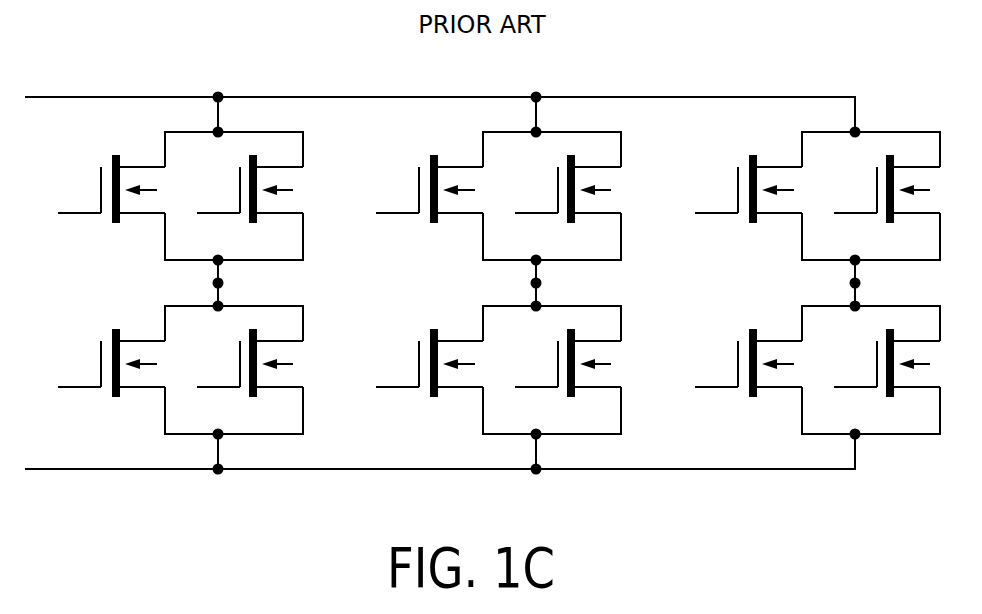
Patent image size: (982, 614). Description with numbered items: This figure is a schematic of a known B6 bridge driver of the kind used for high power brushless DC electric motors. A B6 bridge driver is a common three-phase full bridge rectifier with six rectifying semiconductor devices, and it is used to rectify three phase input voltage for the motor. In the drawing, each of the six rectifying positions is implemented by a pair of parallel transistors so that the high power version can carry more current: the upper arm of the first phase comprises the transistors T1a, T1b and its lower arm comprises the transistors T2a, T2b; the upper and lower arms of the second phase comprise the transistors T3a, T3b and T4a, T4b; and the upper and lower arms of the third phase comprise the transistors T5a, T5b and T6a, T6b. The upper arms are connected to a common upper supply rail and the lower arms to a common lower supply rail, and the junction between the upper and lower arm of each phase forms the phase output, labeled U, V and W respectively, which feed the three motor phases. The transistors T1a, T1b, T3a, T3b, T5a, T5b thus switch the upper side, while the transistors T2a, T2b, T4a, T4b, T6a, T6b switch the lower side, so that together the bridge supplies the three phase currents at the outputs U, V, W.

The transistor T1a (phase U upper arm) T1a is at (111, 189).
The transistor T1b (phase U upper arm, parallel) T1b is at (250, 189).
The transistor T2a (phase U lower arm) T2a is at (107, 363).
The transistor T2b (phase U lower arm, parallel) T2b is at (250, 363).
The transistor T3a (phase V upper arm) T3a is at (429, 189).
The transistor T3b (phase V upper arm, parallel) T3b is at (568, 189).
The transistor T4a (phase V lower arm) T4a is at (425, 363).
The transistor T4b (phase V lower arm, parallel) T4b is at (568, 363).
The transistor T5a (phase W upper arm) T5a is at (748, 189).
The transistor T5b (phase W upper arm, parallel) T5b is at (887, 189).
The transistor T6a (phase W lower arm) T6a is at (744, 363).
The transistor T6b (phase W lower arm, parallel) T6b is at (887, 363).
The phase output U is at (253, 282).
The phase output V is at (569, 282).
The phase output W is at (895, 282).